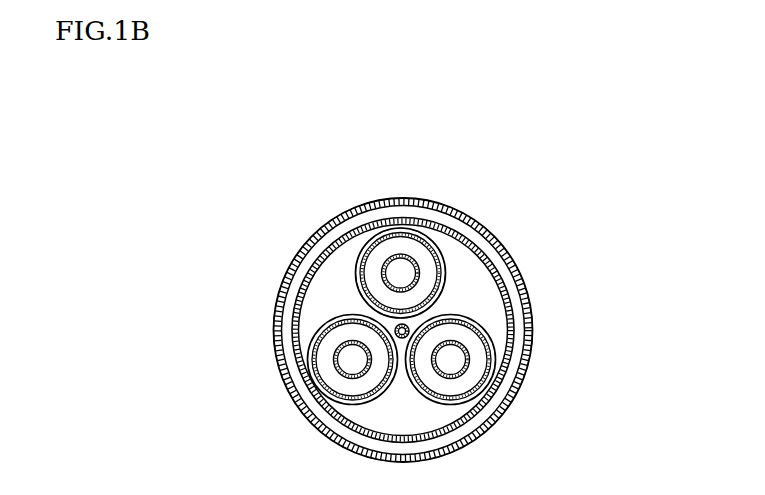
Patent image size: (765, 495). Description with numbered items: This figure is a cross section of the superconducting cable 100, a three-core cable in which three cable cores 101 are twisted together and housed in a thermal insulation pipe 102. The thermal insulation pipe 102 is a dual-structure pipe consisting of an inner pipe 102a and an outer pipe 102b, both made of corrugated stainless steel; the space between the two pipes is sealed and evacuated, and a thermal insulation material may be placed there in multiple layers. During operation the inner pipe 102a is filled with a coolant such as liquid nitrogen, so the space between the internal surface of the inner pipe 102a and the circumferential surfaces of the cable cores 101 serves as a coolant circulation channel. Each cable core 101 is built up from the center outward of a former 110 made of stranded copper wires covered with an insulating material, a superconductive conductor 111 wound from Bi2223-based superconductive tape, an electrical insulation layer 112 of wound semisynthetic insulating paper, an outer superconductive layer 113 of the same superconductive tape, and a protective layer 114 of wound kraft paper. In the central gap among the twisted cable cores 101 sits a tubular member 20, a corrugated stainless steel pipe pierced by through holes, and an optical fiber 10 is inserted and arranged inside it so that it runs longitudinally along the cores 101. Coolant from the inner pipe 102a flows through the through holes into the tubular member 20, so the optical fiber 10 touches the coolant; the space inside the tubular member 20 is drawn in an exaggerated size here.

The superconducting cable 100 is at (484, 207).
The cable core 101 is at (358, 251).
The thermal insulation pipe 102 is at (481, 330).
The inner pipe 102a is at (527, 295).
The outer pipe 102b is at (515, 323).
The optical fiber 10 is at (423, 315).
The tubular member 20 is at (363, 307).
The former 110 is at (338, 356).
The superconductive conductor 111 is at (337, 362).
The electrical insulation layer 112 is at (473, 373).
The outer superconductive layer 113 is at (311, 391).
The protective layer 114 is at (490, 342).